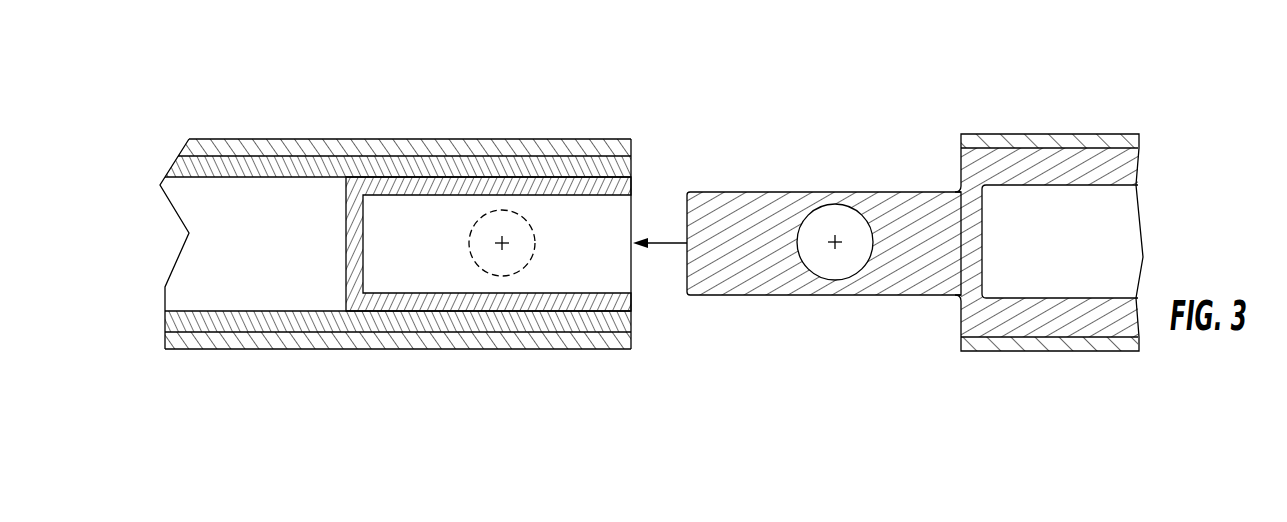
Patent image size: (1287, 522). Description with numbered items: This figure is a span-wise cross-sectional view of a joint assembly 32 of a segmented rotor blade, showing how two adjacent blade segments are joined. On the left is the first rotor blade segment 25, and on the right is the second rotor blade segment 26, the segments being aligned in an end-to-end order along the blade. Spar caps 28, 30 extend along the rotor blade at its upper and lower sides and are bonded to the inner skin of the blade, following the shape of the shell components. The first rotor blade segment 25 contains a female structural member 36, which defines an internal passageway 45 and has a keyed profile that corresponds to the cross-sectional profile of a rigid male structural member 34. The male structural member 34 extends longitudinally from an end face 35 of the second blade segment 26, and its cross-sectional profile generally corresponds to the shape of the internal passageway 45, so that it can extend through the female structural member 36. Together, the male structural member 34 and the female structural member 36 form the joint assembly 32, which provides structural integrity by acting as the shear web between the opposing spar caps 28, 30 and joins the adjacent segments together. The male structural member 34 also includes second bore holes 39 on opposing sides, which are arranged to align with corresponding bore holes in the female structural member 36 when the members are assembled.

The first rotor blade segment 25 is at (190, 118).
The second rotor blade segment 26 is at (1106, 102).
The spar cap 28 is at (500, 150).
The spar cap 30 is at (505, 338).
The joint assembly 32 is at (781, 42).
The male structural member 34 is at (786, 306).
The end face 35 is at (961, 160).
The female structural member 36 is at (383, 305).
The second bore holes 39 is at (835, 262).
The internal passageway 45 is at (617, 213).